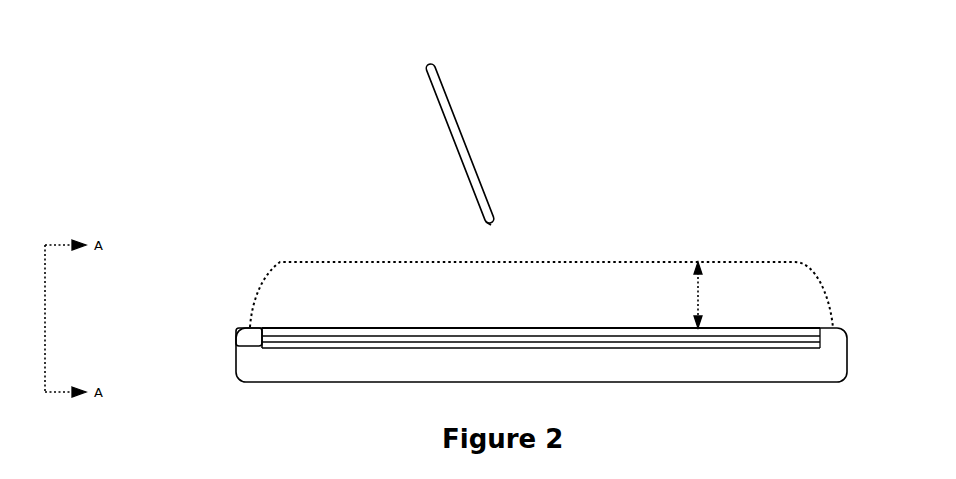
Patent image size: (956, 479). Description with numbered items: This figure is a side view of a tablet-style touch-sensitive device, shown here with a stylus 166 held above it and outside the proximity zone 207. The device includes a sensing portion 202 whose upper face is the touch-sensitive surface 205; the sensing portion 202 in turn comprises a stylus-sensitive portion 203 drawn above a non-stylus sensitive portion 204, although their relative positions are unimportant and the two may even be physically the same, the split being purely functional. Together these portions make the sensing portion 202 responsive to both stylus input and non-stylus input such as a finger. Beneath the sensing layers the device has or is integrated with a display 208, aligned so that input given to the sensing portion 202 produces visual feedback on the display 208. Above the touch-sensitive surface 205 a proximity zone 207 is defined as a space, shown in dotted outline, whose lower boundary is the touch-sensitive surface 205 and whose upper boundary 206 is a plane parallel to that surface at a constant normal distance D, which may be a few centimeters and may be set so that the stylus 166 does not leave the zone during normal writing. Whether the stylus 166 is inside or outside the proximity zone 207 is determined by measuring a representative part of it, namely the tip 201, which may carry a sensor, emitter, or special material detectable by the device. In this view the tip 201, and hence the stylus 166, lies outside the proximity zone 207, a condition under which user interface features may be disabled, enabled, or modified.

The stylus 166 is at (448, 126).
The tip 201 is at (490, 226).
The sensing portion 202 is at (464, 355).
The stylus-sensitive portion 203 is at (262, 331).
The non-stylus sensitive portion 204 is at (262, 340).
The touch-sensitive surface 205 is at (420, 328).
The upper boundary 206 is at (655, 262).
The proximity zone 207 is at (601, 305).
The display 208 is at (318, 348).